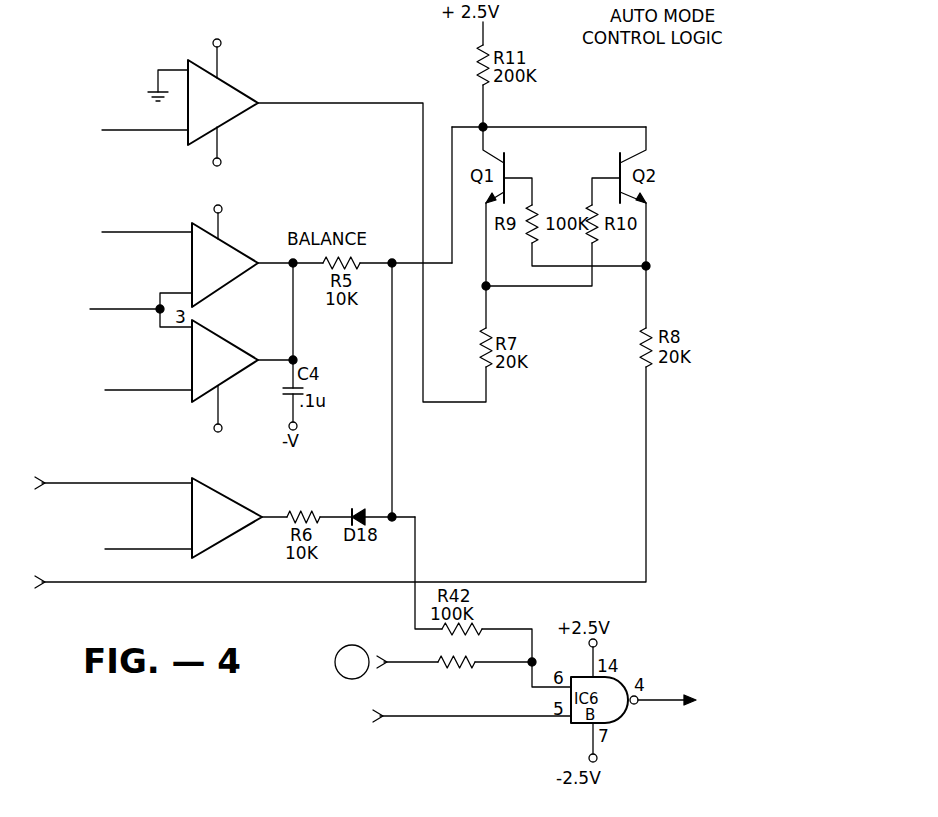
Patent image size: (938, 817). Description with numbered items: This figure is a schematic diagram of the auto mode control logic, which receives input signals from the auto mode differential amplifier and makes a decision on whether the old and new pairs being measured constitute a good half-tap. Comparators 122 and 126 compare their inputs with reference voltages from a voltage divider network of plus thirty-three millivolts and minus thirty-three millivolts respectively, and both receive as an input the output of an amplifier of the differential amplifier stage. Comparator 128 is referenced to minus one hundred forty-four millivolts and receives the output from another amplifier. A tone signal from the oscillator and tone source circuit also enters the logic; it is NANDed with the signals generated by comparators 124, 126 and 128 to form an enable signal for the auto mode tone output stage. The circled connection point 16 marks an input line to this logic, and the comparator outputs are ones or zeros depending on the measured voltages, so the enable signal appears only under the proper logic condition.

The comparator 122 is at (233, 97).
The comparator 124 is at (237, 260).
The comparator 126 is at (237, 353).
The comparator 128 is at (225, 533).
The input signal line 16 is at (435, 678).